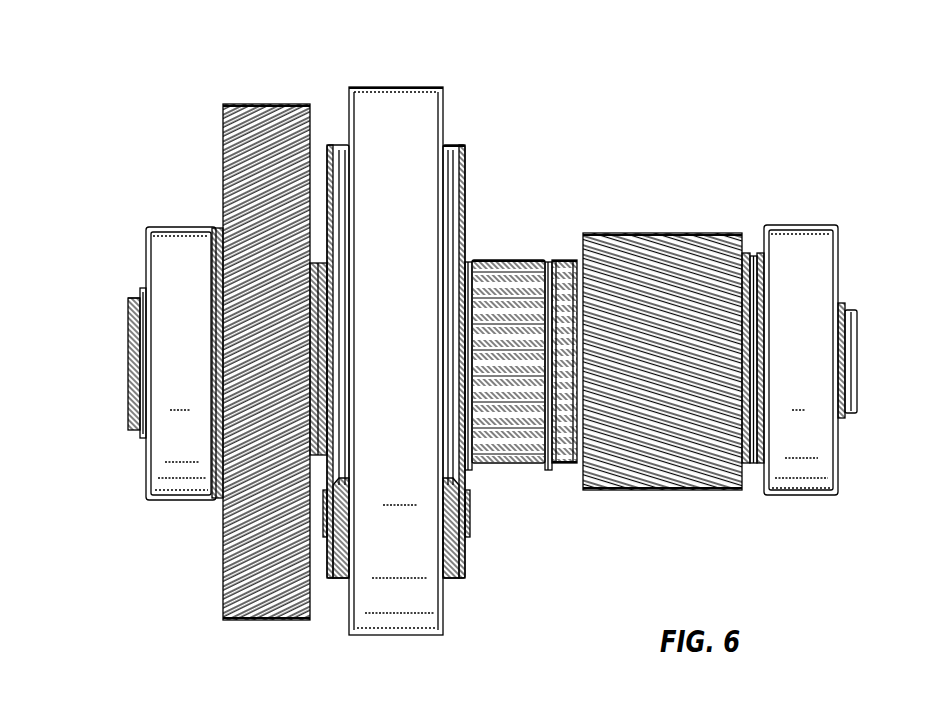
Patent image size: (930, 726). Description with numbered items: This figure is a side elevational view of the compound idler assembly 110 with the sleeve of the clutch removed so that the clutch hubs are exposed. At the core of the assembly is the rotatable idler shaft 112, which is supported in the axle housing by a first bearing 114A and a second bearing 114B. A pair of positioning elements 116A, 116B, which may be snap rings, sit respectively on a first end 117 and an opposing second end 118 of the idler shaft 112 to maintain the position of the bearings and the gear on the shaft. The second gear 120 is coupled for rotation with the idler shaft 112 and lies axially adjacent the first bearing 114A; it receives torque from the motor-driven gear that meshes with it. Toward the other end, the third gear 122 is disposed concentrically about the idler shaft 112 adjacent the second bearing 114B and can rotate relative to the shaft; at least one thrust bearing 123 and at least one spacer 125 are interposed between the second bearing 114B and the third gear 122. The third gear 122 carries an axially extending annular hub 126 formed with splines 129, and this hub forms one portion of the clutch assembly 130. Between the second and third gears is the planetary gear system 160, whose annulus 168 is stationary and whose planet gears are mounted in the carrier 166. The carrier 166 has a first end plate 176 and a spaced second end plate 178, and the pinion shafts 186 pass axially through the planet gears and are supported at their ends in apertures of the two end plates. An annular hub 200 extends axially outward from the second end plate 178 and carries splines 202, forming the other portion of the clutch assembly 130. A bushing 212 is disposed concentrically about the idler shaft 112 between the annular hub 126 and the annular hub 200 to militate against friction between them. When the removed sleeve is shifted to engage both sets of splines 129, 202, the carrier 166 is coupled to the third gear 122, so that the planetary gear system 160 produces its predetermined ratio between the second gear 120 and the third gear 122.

The compound idler assembly 110 is at (131, 102).
The idler shaft 112 is at (121, 291).
The first bearing 114A is at (178, 227).
The second bearing 114B is at (824, 225).
The positioning element 116A is at (141, 288).
The positioning element 116B is at (842, 303).
The first end 117 is at (128, 325).
The second end 118 is at (857, 352).
The second gear 120 is at (243, 103).
The third gear 122 is at (650, 233).
The thrust bearing 123 is at (745, 253).
The spacer 125 is at (753, 255).
The annular hub 126 is at (578, 262).
The splines 129 is at (570, 262).
The clutch assembly 130 is at (525, 465).
The planetary gear system 160 is at (364, 78).
The carrier 166 is at (462, 136).
The annulus 168 is at (410, 87).
The first end plate 176 is at (338, 144).
The second end plate 178 is at (455, 144).
The pinion shafts 186 is at (470, 513).
The annular hub 200 is at (480, 262).
The splines 202 is at (500, 262).
The bushing 212 is at (554, 262).